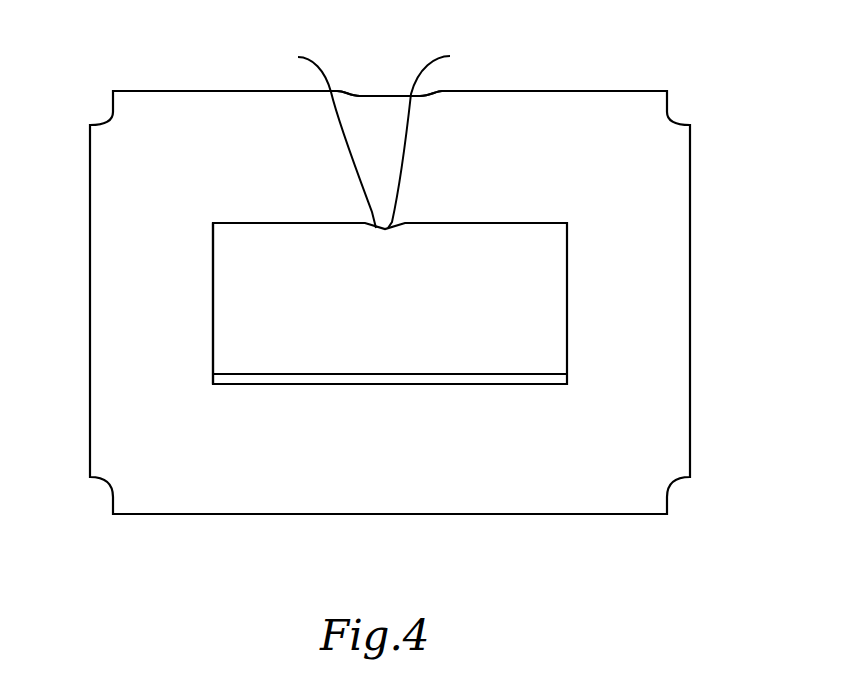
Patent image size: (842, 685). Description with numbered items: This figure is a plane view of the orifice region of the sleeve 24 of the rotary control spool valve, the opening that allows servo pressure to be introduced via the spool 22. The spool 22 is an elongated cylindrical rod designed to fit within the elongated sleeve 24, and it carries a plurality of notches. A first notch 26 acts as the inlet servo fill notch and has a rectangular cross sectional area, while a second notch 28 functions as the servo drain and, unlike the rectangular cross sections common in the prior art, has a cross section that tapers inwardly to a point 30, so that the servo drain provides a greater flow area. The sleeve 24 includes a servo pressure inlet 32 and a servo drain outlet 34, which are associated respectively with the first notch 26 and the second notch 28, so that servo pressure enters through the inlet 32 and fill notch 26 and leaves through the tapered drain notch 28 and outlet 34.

The spool 22 is at (503, 273).
The sleeve 24 is at (537, 91).
The first notch 26 is at (287, 374).
The second notch 28 is at (323, 136).
The point 30 is at (434, 136).
The servo pressure inlet 32 is at (213, 290).
The servo drain outlet 34 is at (360, 96).